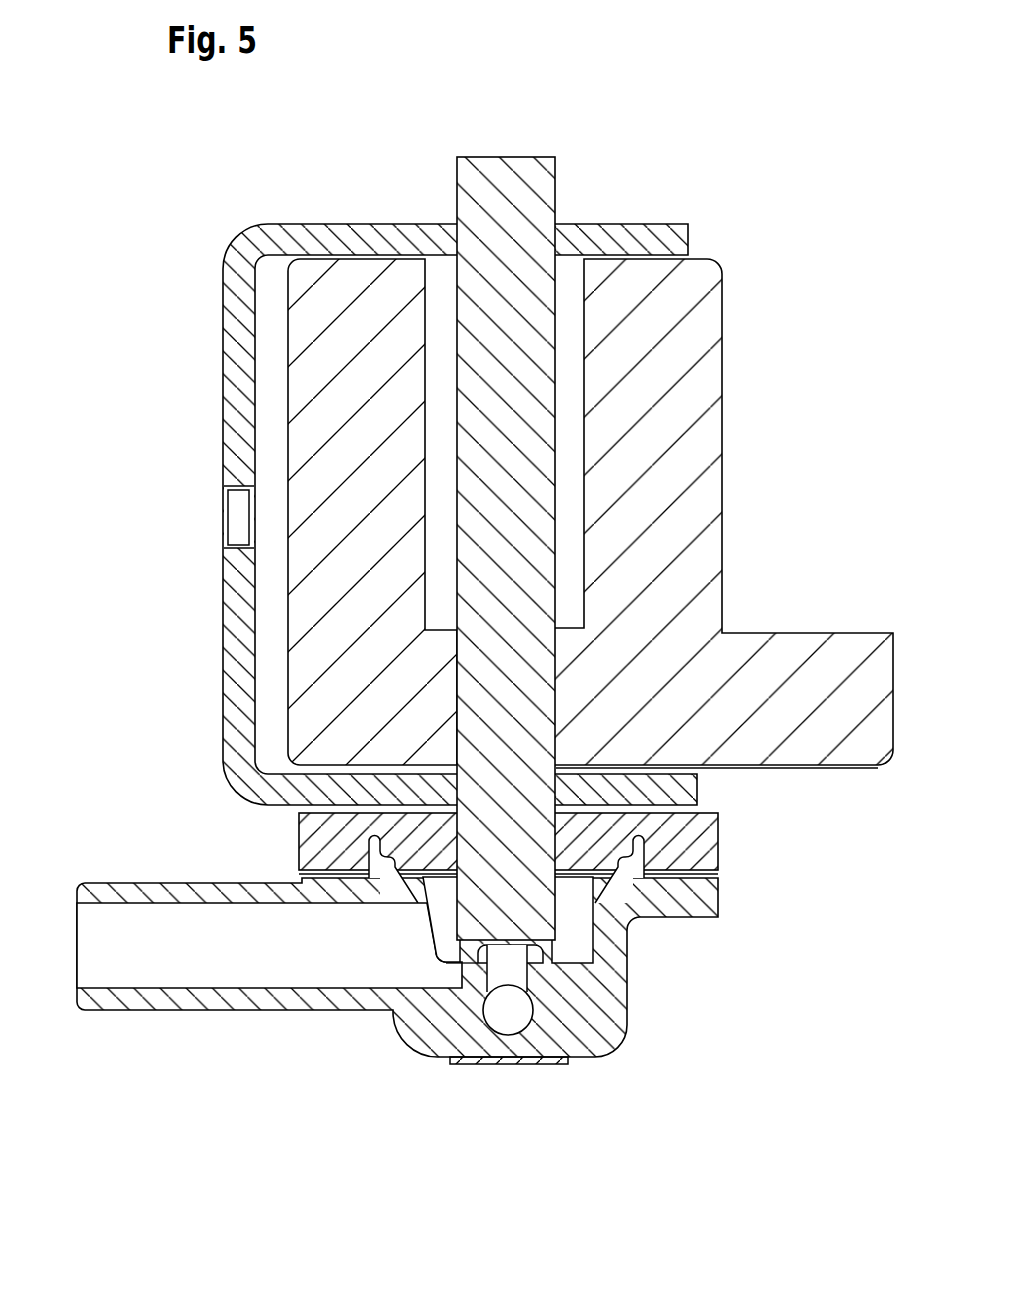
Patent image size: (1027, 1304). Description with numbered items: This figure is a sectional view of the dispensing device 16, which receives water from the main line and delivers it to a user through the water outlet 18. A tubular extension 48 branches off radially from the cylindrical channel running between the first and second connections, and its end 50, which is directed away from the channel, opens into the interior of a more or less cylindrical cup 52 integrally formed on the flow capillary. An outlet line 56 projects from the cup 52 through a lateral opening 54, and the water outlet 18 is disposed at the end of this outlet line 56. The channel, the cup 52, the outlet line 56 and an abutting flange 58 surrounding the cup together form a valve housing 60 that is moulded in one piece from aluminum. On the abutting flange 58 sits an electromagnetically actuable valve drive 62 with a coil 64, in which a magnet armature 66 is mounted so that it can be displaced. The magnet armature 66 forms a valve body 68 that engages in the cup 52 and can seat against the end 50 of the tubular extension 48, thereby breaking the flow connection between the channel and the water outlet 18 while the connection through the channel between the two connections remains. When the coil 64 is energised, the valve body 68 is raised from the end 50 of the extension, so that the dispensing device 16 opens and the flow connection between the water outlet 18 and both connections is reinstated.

The dispensing device 16 is at (667, 100).
The water outlet 18 is at (378, 999).
The tubular extension 48 is at (508, 965).
The end of the tubular extension 50 is at (505, 942).
The cup 52 is at (574, 923).
The lateral opening 54 is at (425, 928).
The outlet line 56 is at (248, 998).
The abutting flange 58 is at (702, 866).
The valve housing 60 is at (508, 1068).
The valve drive 62 is at (262, 203).
The coil 64 is at (700, 442).
The magnet armature 66 is at (472, 504).
The valve body 68 is at (467, 178).